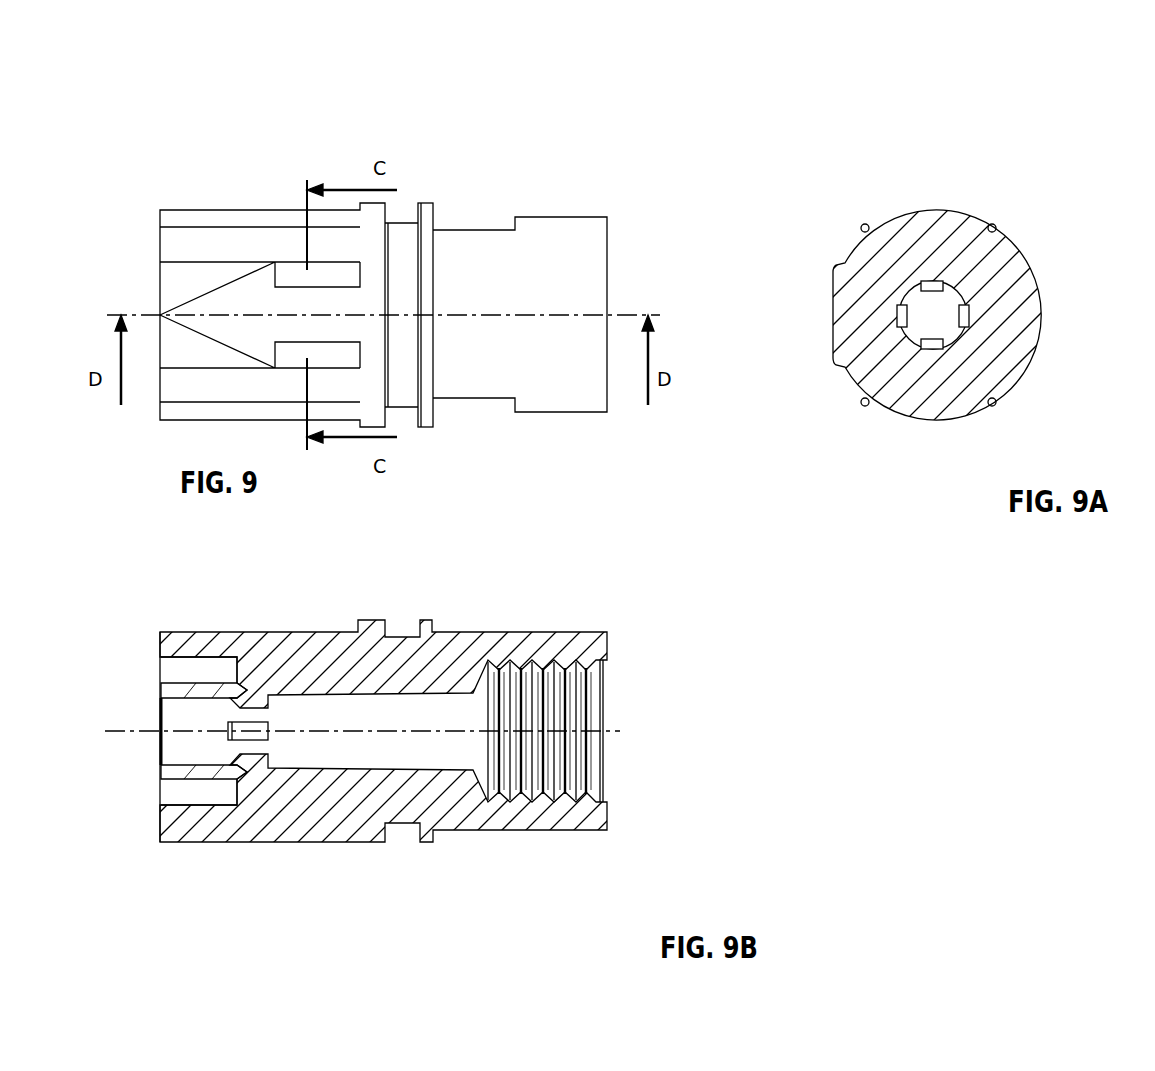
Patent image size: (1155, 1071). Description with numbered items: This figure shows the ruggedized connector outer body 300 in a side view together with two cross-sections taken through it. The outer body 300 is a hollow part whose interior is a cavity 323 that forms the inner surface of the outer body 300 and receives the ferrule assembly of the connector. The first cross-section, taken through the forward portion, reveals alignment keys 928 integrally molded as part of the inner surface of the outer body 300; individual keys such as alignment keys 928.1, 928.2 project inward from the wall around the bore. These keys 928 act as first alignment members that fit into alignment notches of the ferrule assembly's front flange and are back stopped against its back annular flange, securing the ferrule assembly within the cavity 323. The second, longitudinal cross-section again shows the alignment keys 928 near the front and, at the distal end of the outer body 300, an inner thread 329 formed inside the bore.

In FIG. 9, the ruggedized connector outer body 300 is at (150, 227).
In FIG. 9A, the alignment key 928.1 is at (928, 325).
In FIG. 9A, the alignment key 928.2 is at (928, 325).
In FIG. 9B, the alignment key 928 is at (259, 700).
In FIG. 9B, the cavity 323 is at (372, 761).
In FIG. 9B, the inner thread 329 is at (590, 787).